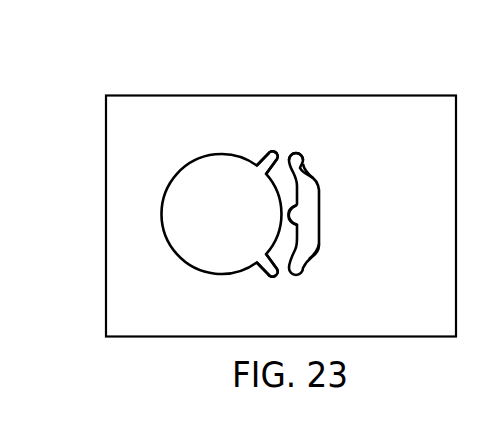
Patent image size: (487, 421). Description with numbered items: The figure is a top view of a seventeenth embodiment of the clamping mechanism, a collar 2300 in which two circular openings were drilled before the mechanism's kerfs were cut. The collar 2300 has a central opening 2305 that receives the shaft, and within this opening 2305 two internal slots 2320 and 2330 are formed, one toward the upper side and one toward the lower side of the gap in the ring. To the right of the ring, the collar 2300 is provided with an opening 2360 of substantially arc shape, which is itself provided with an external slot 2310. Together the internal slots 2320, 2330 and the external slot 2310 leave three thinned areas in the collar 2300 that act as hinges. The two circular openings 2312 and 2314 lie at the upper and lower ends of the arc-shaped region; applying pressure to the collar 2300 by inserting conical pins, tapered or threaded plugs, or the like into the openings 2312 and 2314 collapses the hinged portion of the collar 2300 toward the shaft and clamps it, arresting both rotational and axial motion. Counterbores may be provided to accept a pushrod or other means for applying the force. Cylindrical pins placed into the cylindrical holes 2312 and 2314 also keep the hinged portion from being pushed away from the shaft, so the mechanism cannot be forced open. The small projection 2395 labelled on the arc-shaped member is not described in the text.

The collar 2300 is at (104, 118).
The opening 2305 is at (183, 204).
The external slot 2310 is at (288, 152).
The opening 2312 is at (310, 178).
The opening 2314 is at (315, 250).
The internal slot 2320 is at (272, 152).
The internal slot 2330 is at (277, 273).
The opening 2360 is at (307, 154).
The protrusion on insert 2395 is at (300, 214).